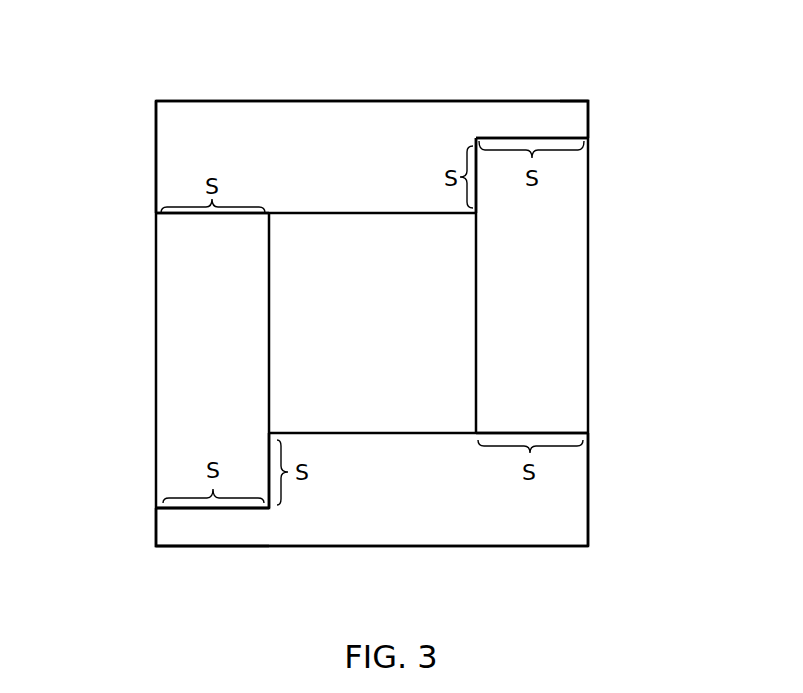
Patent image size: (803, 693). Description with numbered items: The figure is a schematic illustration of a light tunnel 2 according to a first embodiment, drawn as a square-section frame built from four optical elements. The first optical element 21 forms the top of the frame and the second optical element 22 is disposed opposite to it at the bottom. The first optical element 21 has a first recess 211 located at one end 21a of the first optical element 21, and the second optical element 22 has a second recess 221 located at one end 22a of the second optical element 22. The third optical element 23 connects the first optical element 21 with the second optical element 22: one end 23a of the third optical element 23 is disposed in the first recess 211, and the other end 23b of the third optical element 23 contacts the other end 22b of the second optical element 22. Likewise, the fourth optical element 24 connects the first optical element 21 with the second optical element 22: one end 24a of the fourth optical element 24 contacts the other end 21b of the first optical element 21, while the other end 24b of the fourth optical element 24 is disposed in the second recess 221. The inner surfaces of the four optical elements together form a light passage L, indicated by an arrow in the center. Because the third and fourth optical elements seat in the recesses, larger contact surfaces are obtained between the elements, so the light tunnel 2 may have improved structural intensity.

The light tunnel 2 is at (107, 31).
The first optical element 21 is at (349, 134).
The end of the first optical element 21a is at (553, 118).
The other end of the first optical element 21b is at (175, 152).
The first recess 211 is at (565, 138).
The second optical element 22 is at (383, 505).
The end of the second optical element 22a is at (217, 527).
The other end of the second optical element 22b is at (563, 497).
The second recess 221 is at (188, 509).
The third optical element 23 is at (560, 306).
The end of the third optical element 23a is at (567, 180).
The other end of the third optical element 23b is at (560, 415).
The fourth optical element 24 is at (192, 365).
The end of the fourth optical element 24a is at (193, 222).
The other end of the fourth optical element 24b is at (187, 480).
The light passage L is at (432, 298).